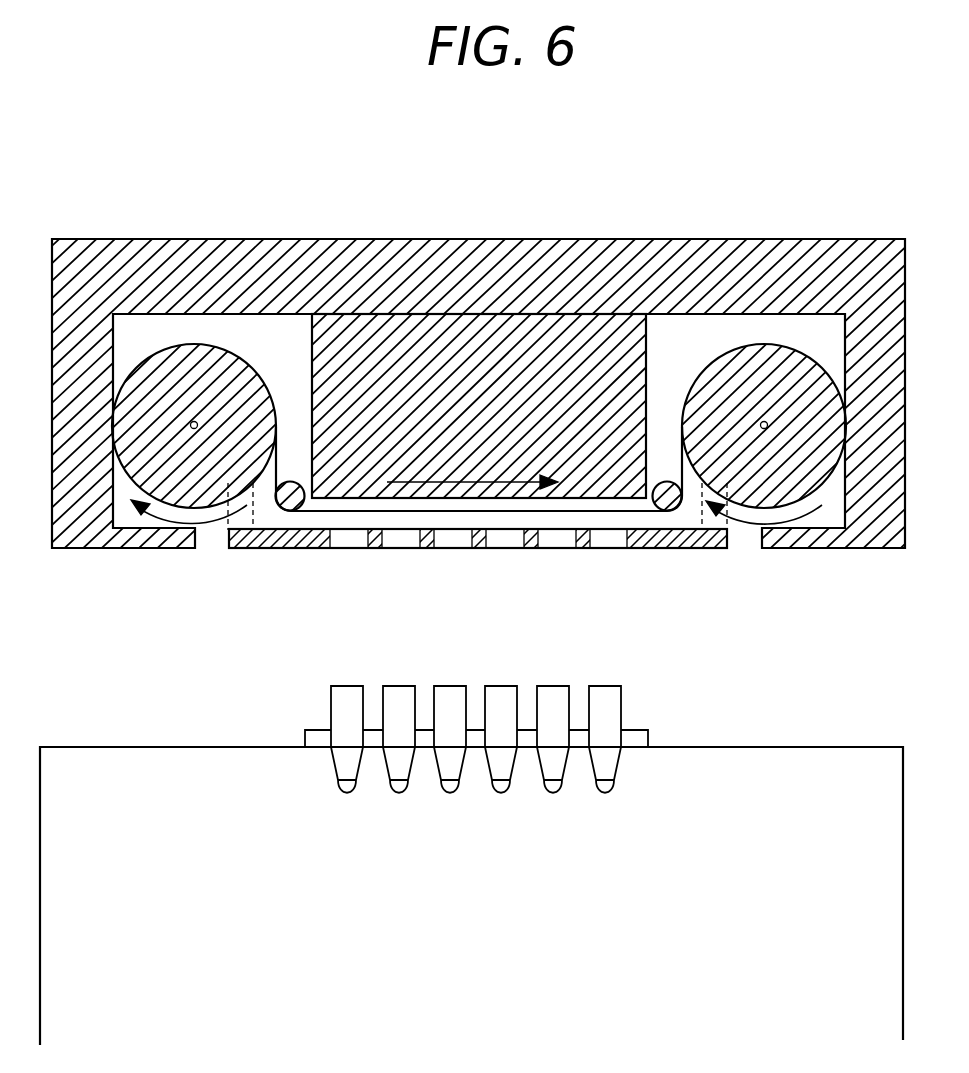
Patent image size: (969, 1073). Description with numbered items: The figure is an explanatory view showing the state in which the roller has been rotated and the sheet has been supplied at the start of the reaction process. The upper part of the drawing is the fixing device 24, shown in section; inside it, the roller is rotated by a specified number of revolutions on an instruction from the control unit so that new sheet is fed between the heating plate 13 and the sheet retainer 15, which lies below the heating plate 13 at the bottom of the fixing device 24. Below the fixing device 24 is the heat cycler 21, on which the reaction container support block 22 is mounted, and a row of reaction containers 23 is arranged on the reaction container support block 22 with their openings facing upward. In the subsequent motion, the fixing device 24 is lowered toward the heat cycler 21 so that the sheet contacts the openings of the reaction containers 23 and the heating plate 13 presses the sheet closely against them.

The fixing device 24 is at (200, 260).
The heating plate 13 is at (474, 365).
The sheet retainer 15 is at (664, 548).
The heat cycler 21 is at (113, 775).
The reaction container support block 22 is at (305, 745).
The reaction containers 23 is at (330, 706).